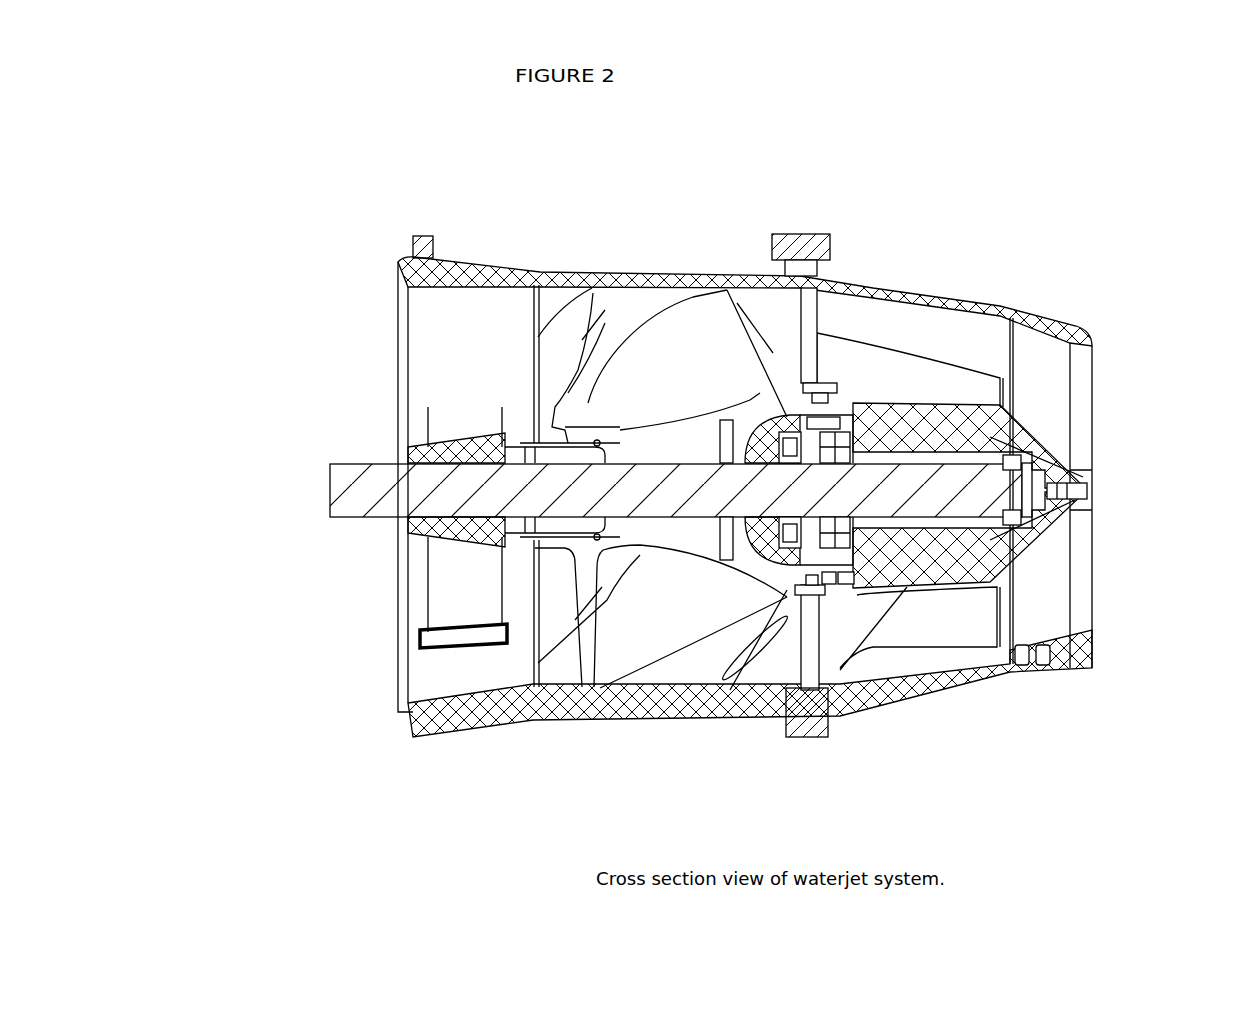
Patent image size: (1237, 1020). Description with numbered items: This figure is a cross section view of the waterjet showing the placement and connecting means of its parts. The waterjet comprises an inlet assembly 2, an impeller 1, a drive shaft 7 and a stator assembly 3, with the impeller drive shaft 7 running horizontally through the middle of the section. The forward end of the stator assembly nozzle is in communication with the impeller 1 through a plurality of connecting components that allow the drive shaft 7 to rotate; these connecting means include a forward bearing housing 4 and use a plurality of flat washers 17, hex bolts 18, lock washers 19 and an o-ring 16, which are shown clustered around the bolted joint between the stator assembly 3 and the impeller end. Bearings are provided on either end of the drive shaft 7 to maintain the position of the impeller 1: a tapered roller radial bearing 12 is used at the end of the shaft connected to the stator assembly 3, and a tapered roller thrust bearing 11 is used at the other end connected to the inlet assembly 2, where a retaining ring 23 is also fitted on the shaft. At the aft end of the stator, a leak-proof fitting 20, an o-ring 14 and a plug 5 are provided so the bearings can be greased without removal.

The impeller 1 is at (563, 305).
The inlet assembly 2 is at (398, 665).
The stator assembly 3 is at (978, 304).
The forward bearing housing 4 is at (756, 416).
The plug 5 is at (1092, 492).
The drive shaft 7 is at (328, 475).
The tapered roller thrust bearing 11 is at (782, 440).
The tapered roller radial bearing 12 is at (833, 440).
The o-ring 14 is at (1095, 490).
The o-ring 16 is at (798, 695).
The flat washers 17 is at (848, 581).
The hex bolts 18 is at (800, 583).
The lock washers 19 is at (833, 583).
The leak-proof fitting 20 is at (1094, 478).
The retaining ring 23 is at (718, 500).